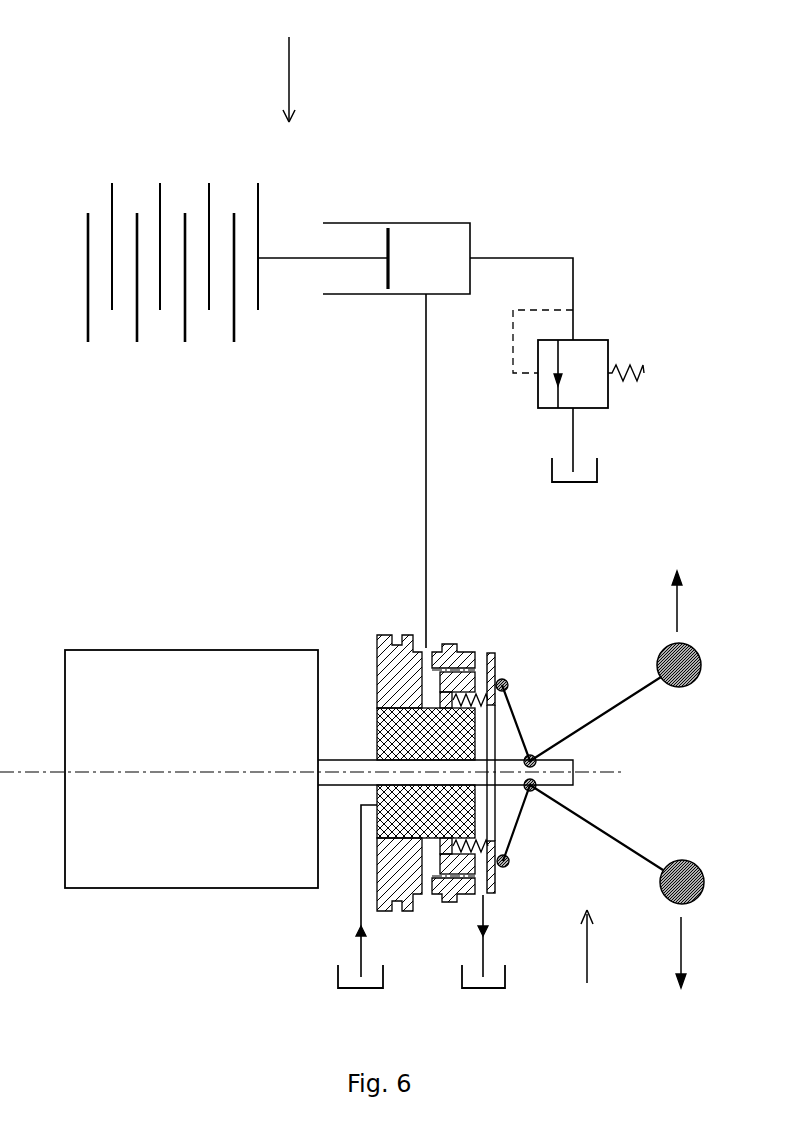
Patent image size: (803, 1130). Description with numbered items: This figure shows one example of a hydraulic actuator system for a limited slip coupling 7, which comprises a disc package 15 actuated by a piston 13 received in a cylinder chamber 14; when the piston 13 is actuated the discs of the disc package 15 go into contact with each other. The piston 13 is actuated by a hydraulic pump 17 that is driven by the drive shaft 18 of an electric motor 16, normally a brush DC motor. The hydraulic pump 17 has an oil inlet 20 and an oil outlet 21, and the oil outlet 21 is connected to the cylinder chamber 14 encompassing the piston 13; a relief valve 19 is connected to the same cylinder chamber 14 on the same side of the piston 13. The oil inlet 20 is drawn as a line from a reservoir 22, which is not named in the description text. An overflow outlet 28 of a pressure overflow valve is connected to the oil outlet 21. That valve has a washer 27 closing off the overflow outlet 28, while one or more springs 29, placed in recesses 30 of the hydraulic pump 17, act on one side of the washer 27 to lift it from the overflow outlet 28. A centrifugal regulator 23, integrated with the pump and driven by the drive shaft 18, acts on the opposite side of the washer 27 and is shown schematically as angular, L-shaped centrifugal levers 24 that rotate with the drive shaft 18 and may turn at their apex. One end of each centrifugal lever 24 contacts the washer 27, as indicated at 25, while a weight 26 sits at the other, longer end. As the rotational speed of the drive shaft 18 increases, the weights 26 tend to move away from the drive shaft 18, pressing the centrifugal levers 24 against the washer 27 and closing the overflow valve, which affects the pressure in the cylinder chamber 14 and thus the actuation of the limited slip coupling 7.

The limited slip coupling 7 is at (286, 63).
The piston 13 is at (388, 252).
The cylinder chamber 14 is at (441, 247).
The disc package 15 is at (181, 222).
The electric motor 16 is at (180, 667).
The hydraulic pump 17 is at (393, 727).
The drive shaft 18 is at (339, 773).
The relief valve 19 is at (595, 352).
The oil inlet 20 is at (350, 898).
The oil outlet 21 is at (427, 650).
The reservoir 22 is at (332, 973).
The centrifugal regulator 23 is at (585, 967).
The centrifugal levers 24 is at (623, 840).
The contact between centrifugal levers and washer 25 is at (510, 862).
The weight 26 is at (670, 662).
The washer 27 is at (531, 762).
The overflow outlet 28 is at (489, 660).
The springs 29 is at (497, 883).
The recesses 30 is at (458, 857).